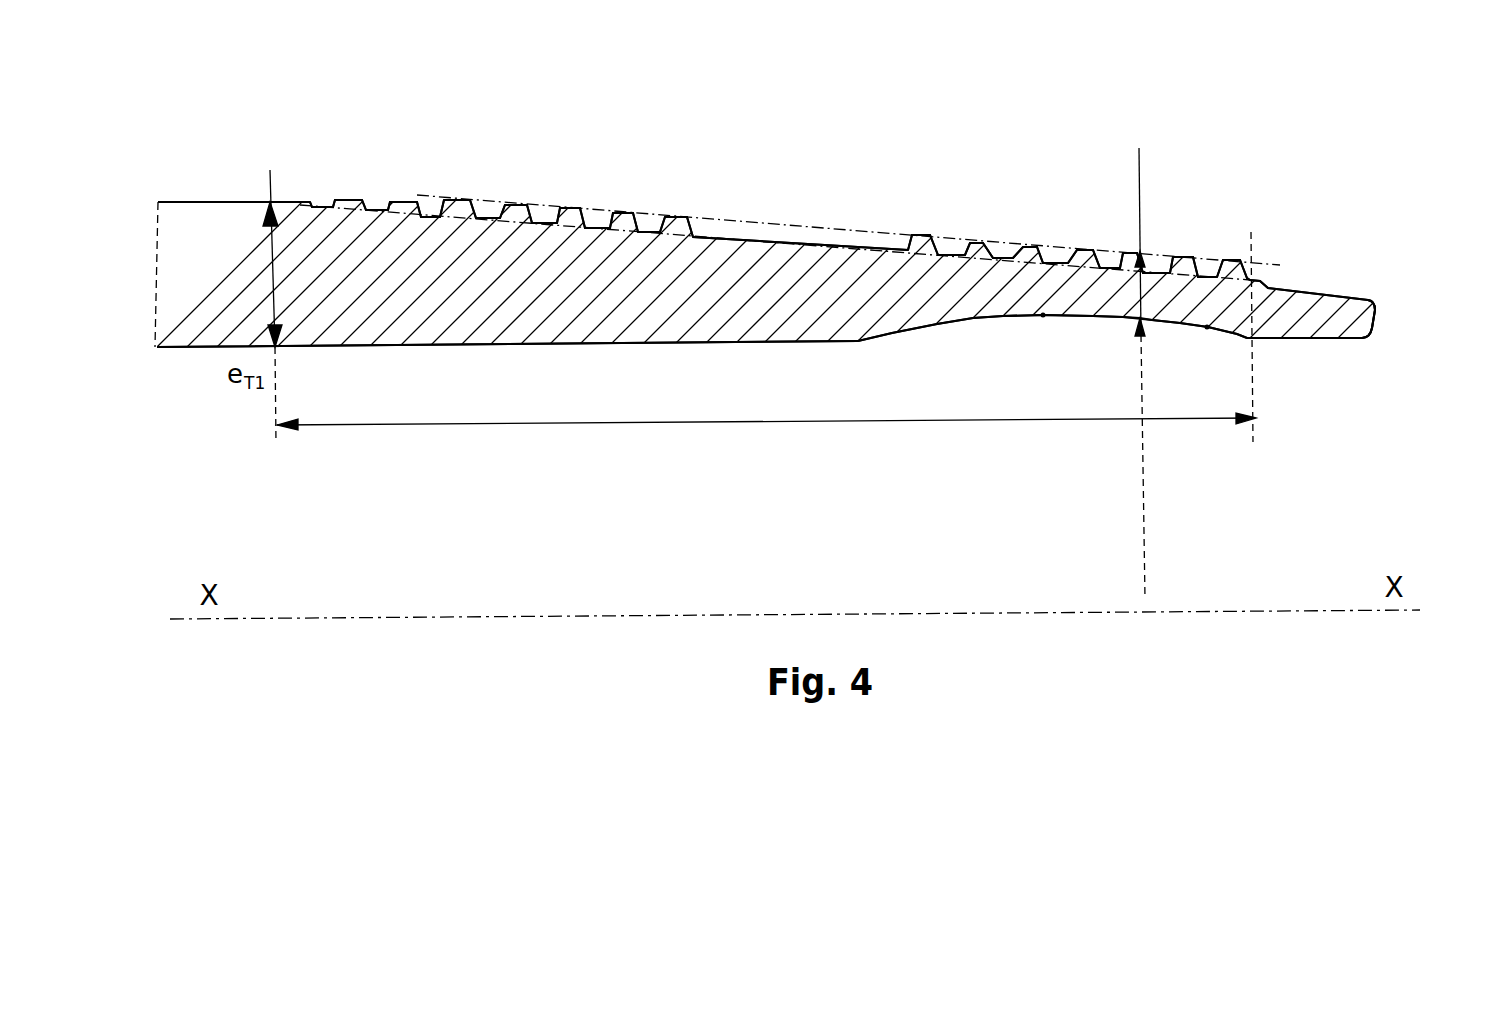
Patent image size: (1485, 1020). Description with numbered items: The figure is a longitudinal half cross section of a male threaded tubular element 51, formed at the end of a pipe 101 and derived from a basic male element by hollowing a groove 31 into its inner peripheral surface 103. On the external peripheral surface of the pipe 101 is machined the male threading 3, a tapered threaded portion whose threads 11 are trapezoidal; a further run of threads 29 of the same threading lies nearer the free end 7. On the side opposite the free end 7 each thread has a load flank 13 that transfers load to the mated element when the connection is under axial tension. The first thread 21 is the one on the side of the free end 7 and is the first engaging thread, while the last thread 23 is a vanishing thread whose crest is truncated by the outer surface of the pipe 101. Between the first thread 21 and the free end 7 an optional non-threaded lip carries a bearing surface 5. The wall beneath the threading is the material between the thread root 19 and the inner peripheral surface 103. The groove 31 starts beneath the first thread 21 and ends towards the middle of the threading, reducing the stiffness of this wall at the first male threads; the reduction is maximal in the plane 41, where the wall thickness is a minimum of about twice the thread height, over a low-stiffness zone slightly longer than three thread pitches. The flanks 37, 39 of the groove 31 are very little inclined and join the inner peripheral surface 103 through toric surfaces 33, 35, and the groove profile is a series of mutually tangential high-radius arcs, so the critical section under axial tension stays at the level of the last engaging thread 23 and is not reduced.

The male threading 3 is at (856, 184).
The bearing surface 5 is at (1323, 286).
The free end 7 is at (1375, 322).
The threads 11 is at (670, 221).
The load flank 13 is at (662, 226).
The thread root 19 is at (432, 213).
The first thread 21 is at (1233, 259).
The last thread 23 is at (353, 200).
The second set of ribs 29 is at (978, 243).
The groove 31 is at (1103, 319).
The toric surface 33 is at (860, 341).
The toric surface 35 is at (1249, 342).
The flank of groove 37 is at (1190, 325).
The flank of groove 39 is at (945, 325).
The plane 41 is at (1124, 373).
The male threaded element 51 is at (767, 435).
The pipe 101 is at (228, 252).
The inner peripheral surface 103 is at (503, 348).